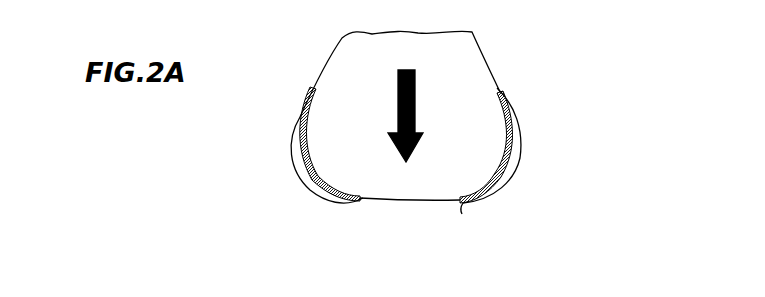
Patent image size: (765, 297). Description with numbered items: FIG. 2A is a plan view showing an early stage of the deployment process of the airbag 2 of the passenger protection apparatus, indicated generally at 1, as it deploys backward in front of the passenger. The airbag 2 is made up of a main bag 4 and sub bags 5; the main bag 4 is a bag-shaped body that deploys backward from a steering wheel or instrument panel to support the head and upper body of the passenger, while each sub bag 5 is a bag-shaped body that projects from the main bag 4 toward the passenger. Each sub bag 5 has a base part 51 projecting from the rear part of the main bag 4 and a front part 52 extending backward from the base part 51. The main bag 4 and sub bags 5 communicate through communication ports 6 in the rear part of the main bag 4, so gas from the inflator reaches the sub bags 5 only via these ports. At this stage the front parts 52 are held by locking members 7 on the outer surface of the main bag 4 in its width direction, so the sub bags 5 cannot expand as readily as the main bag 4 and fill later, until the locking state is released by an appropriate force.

The optical device 1 is at (289, 70).
The airbag 2 is at (598, 72).
The main bag 4 is at (478, 52).
The sub bag 5 is at (575, 145).
The base part 51 is at (476, 206).
The front part 52 is at (505, 98).
The communication port 6 is at (462, 214).
The locking member 7 is at (300, 118).